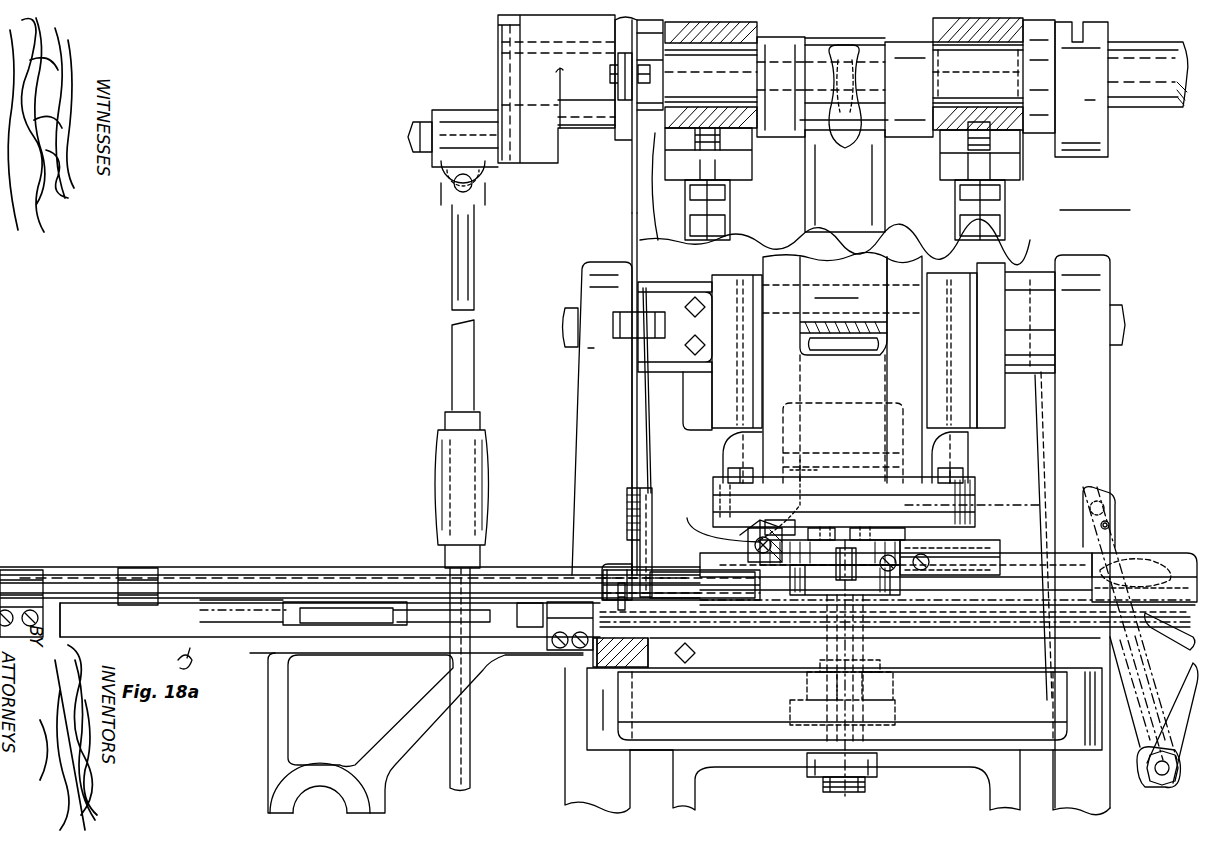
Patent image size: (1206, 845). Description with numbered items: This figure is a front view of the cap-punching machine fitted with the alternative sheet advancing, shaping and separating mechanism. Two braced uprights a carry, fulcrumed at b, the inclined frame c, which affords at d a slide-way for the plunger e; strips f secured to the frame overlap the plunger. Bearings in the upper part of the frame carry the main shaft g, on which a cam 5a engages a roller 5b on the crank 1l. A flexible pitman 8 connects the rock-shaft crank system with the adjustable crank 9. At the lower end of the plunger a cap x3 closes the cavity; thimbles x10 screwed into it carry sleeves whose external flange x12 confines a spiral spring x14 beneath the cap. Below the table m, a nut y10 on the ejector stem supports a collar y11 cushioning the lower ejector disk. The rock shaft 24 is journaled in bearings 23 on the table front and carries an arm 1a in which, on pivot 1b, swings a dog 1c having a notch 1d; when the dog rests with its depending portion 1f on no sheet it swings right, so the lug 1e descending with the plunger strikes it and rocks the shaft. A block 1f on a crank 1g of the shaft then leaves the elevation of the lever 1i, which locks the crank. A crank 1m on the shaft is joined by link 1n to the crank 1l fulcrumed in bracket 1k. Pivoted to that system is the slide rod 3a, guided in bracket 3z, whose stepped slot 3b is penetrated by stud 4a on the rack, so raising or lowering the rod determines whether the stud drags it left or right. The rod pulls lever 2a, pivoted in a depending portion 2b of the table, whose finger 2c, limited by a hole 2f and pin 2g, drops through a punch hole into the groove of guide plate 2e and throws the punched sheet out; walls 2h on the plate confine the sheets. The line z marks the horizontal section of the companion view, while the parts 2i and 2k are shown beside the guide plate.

The crank 9 is at (537, 158).
The cam 5a is at (615, 138).
The roller 5b is at (618, 80).
The fulcrum b is at (745, 130).
The shaft g is at (1036, 114).
The frame c is at (620, 418).
The lever 1i is at (635, 470).
The plunger e is at (840, 367).
The strips f is at (952, 350).
The slide-way d is at (1016, 345).
The uprights a is at (1056, 785).
The pin 2g is at (1087, 507).
The cap x3 is at (950, 510).
The spiral spring x14 is at (905, 535).
The external flange x12 is at (823, 600).
The thimbles x10 is at (880, 603).
The collar y11 is at (812, 780).
The nut y10 is at (868, 784).
The pivot 1b is at (752, 558).
The dog 1c is at (757, 512).
The notch 1d is at (775, 510).
The lug 1e is at (810, 525).
The arm 1a is at (845, 530).
The section line z is at (712, 510).
The slide block 2i is at (940, 575).
The walls 2h is at (990, 560).
The rock shaft 24 is at (355, 578).
The stud 4a is at (398, 612).
The slot 3b is at (315, 652).
The bracket 3z is at (547, 627).
The flexible pitman 8 is at (474, 362).
The block 1f is at (627, 507).
The crank 1g is at (642, 550).
The bearings 23 is at (714, 575).
The crank 1m is at (605, 585).
The link 1n is at (622, 612).
The crank 1l is at (620, 653).
The bracket 1k is at (665, 668).
The slide rod 3a is at (783, 618).
The table m is at (990, 660).
The end block 2k is at (1175, 552).
The hole 2f is at (1110, 503).
The finger 2c is at (1140, 550).
The guide plate 2e is at (1168, 597).
The depending portion 2b is at (1150, 710).
The lever 2a is at (1145, 792).